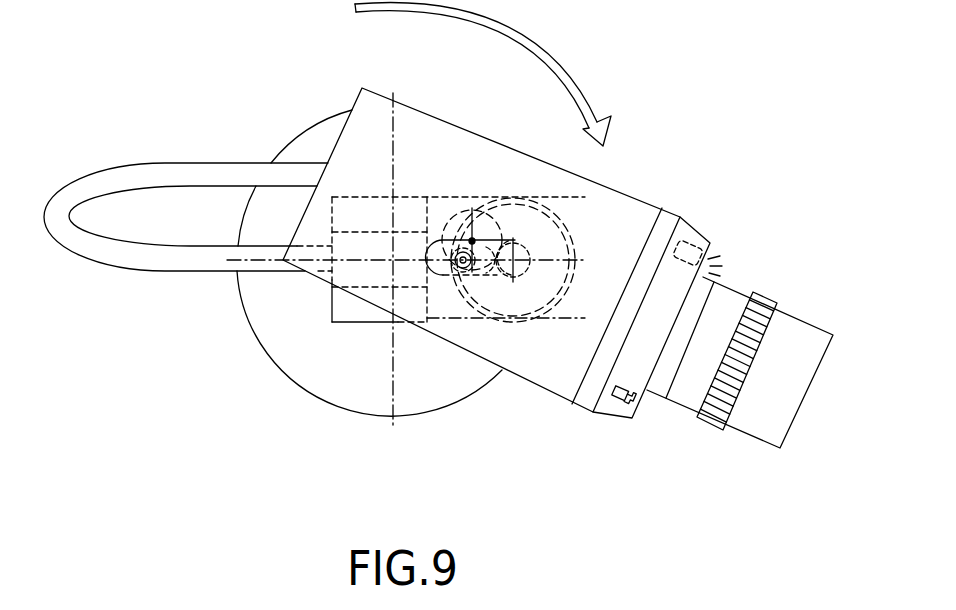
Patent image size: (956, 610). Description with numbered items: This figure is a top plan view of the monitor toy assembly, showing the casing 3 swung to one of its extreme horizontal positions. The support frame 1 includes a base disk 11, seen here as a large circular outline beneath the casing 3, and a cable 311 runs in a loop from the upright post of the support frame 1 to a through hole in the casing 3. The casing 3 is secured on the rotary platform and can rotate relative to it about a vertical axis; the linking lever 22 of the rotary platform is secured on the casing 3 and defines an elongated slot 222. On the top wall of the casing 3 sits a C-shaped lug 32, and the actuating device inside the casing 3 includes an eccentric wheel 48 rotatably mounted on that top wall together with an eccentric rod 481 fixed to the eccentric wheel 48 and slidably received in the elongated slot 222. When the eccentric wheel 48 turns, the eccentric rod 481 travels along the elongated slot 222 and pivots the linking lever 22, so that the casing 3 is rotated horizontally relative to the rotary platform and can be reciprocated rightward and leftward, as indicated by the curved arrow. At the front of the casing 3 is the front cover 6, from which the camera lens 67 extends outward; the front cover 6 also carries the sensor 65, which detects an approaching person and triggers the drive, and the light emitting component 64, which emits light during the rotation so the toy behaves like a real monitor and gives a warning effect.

The support frame 1 is at (345, 308).
The base disk 11 is at (325, 367).
The casing 3 is at (645, 197).
The cable 311 is at (180, 175).
The C-shaped lug 32 is at (528, 306).
The linking lever 22 is at (437, 278).
The elongated slot 222 is at (430, 252).
The eccentric wheel 48 is at (482, 228).
The eccentric rod 481 is at (468, 268).
The front cover 6 is at (695, 240).
The light emitting component 64 is at (697, 254).
The sensor 65 is at (618, 403).
The camera lens 67 is at (790, 417).